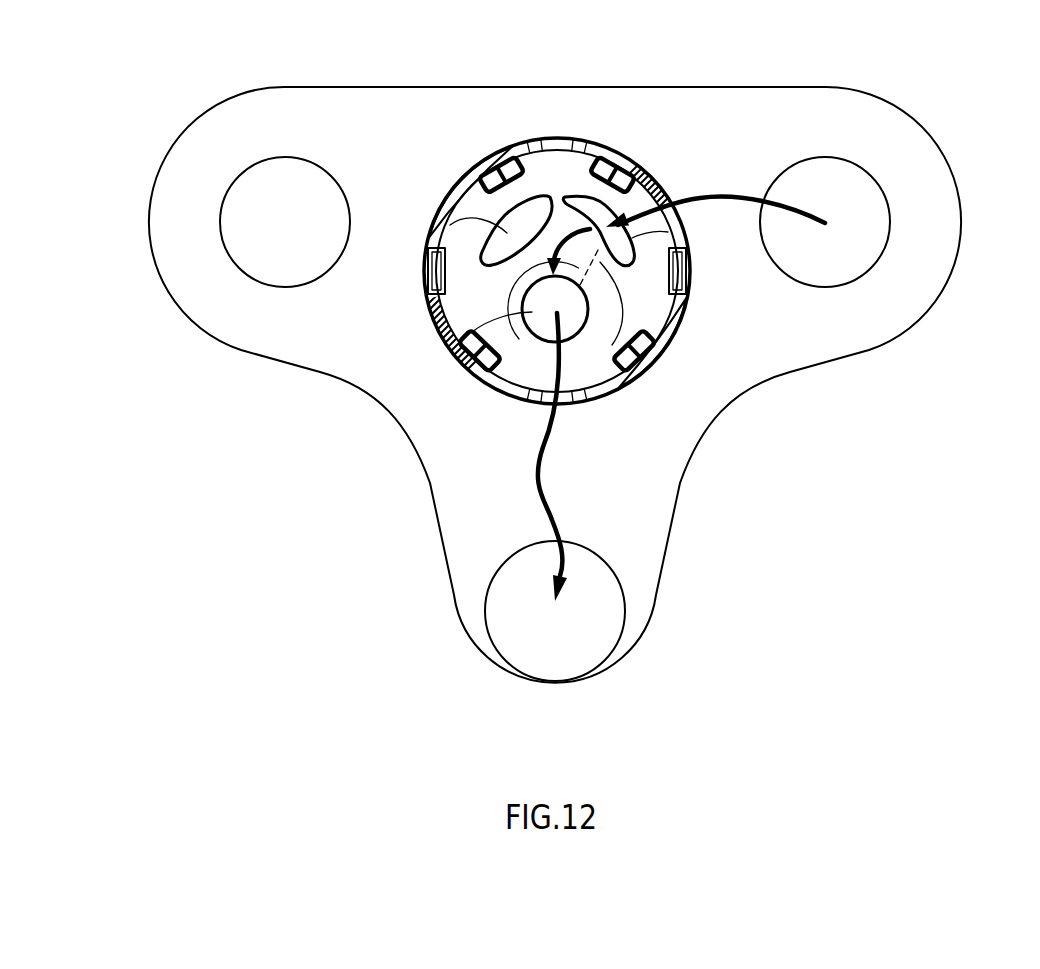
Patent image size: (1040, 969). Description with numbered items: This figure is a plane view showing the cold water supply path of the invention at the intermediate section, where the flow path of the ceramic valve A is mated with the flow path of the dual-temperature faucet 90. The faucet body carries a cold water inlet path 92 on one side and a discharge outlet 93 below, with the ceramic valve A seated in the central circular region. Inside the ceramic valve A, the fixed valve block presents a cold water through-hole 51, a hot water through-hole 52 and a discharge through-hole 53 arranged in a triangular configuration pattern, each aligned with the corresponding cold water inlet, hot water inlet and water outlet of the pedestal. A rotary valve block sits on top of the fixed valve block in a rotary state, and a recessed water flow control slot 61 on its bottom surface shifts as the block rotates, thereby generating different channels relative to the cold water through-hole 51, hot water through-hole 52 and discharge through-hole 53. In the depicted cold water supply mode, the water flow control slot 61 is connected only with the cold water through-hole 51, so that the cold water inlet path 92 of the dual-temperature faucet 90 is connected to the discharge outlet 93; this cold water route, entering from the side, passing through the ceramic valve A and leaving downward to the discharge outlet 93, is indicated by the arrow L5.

The dual-temperature faucet 90 is at (713, 452).
The cold water inlet path 92 is at (888, 200).
The discharge outlet 93 is at (486, 612).
The ceramic valve A is at (470, 145).
The water flow control slot 61 is at (650, 355).
The hot water through-hole 52 is at (430, 256).
The cold water through-hole 51 is at (683, 227).
The discharge through-hole 53 is at (450, 355).
The arrow L5 is at (722, 198).